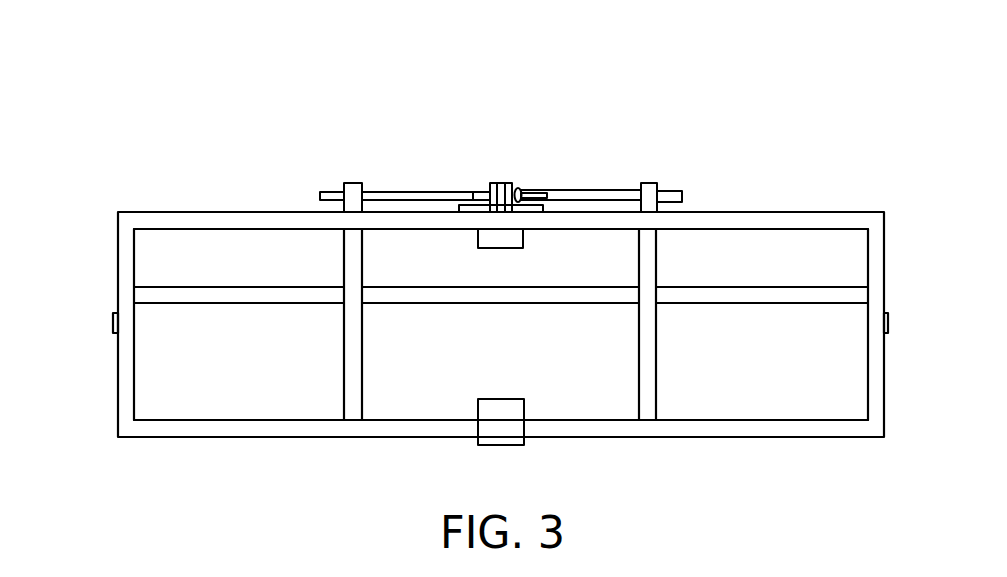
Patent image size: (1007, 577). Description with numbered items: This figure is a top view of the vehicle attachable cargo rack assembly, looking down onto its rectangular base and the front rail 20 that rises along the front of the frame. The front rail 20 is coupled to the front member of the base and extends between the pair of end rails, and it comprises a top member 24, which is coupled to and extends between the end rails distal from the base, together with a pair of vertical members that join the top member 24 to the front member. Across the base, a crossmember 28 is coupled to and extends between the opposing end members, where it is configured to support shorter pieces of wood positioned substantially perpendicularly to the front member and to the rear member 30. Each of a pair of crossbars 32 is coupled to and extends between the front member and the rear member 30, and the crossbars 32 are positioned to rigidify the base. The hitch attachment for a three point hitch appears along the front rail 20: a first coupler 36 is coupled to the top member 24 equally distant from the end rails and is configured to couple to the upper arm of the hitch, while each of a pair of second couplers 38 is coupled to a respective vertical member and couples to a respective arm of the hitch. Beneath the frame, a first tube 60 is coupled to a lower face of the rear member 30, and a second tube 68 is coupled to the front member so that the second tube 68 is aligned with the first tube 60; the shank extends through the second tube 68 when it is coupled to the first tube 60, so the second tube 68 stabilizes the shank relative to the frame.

The front rail 20 is at (772, 212).
The top member 24 is at (277, 212).
The crossmember 28 is at (193, 288).
The rear member 30 is at (734, 428).
The crossbars 32 is at (640, 331).
The first coupler 36 is at (505, 183).
The second couplers 38 is at (350, 185).
The first tube 60 is at (512, 405).
The second tube 68 is at (520, 244).